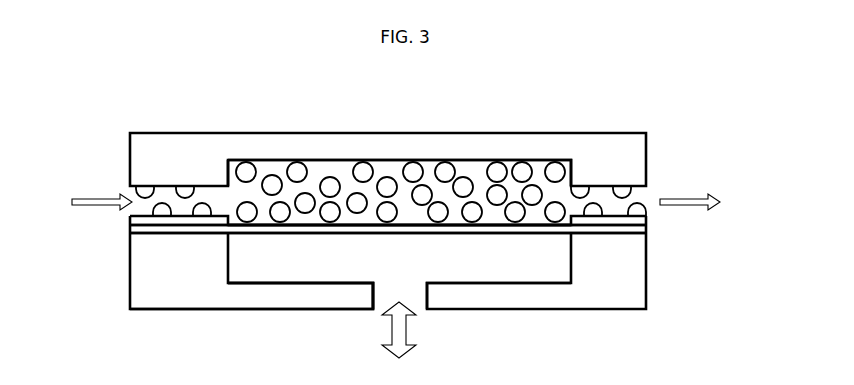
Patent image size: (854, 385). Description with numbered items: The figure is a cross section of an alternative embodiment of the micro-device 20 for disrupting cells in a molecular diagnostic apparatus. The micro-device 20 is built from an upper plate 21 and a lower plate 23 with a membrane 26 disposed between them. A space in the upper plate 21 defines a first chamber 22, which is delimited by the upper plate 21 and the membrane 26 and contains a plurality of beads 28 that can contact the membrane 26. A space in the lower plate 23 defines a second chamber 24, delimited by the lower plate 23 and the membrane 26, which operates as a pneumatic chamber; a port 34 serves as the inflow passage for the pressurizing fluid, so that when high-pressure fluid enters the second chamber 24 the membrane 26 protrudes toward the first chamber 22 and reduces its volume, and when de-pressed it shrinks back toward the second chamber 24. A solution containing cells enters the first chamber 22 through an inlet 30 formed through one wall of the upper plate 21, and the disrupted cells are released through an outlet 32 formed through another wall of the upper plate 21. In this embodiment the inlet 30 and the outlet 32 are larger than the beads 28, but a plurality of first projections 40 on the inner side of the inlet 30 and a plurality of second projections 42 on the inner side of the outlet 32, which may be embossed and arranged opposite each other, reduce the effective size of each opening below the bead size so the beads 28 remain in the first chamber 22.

The micro-device 20 is at (666, 124).
The upper plate 21 is at (646, 160).
The first chamber 22 is at (321, 170).
The lower plate 23 is at (646, 270).
The second chamber 24 is at (278, 262).
The membrane 26 is at (498, 235).
The beads 28 is at (447, 170).
The inlet 30 is at (171, 193).
The outlet 32 is at (603, 193).
The port 34 is at (400, 290).
The first projections 40 is at (160, 206).
The second projections 42 is at (593, 216).